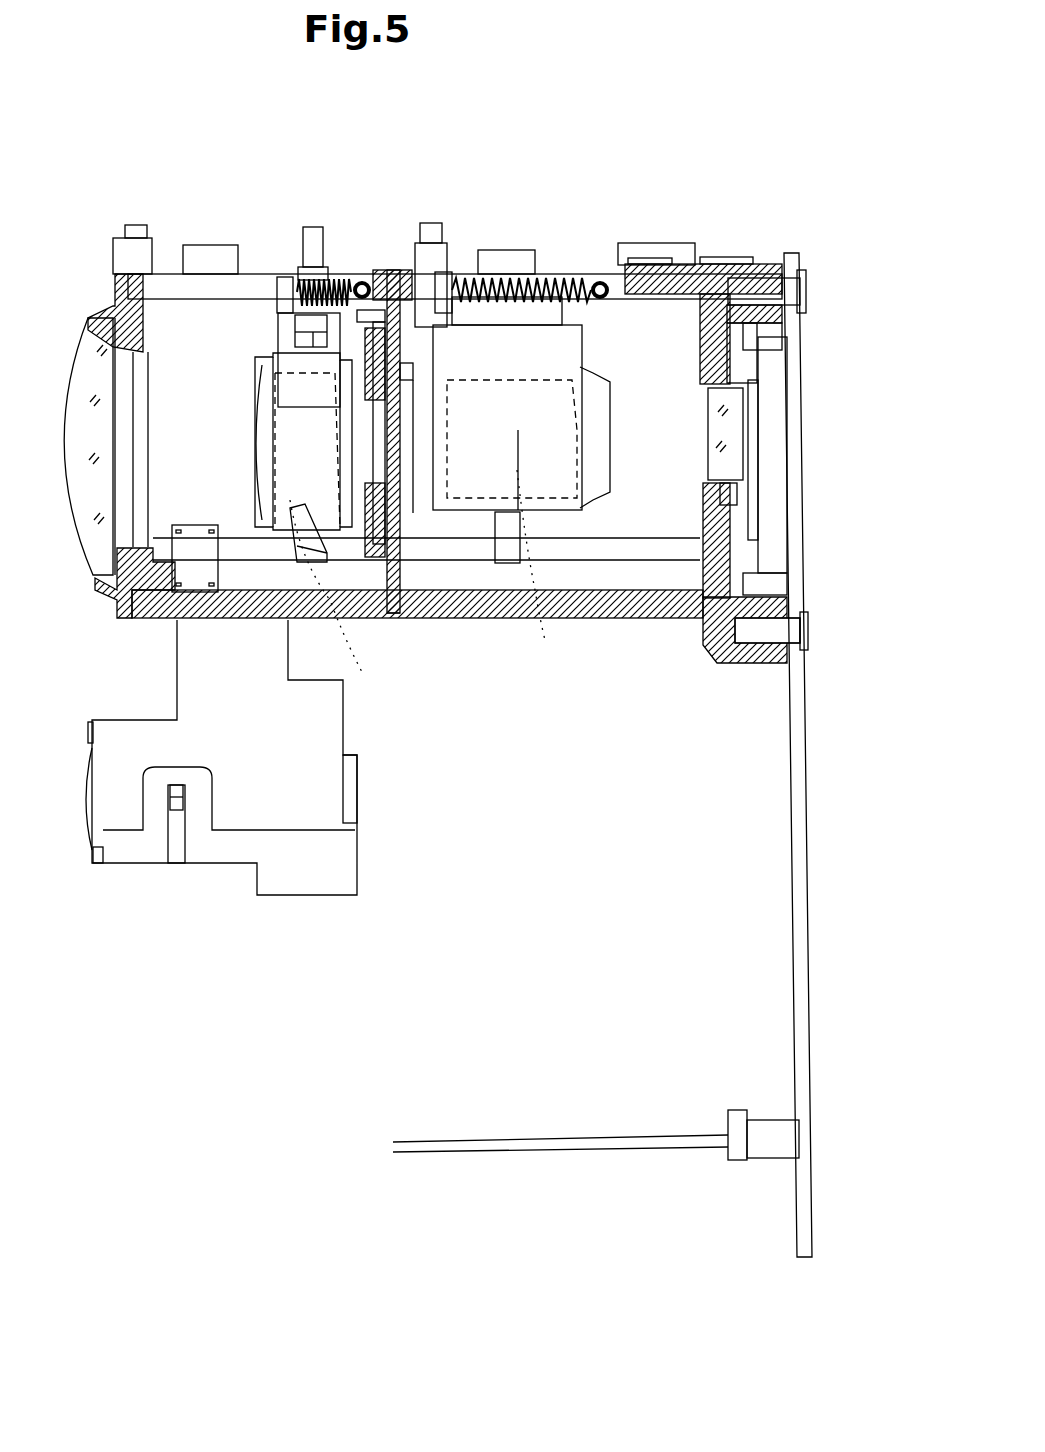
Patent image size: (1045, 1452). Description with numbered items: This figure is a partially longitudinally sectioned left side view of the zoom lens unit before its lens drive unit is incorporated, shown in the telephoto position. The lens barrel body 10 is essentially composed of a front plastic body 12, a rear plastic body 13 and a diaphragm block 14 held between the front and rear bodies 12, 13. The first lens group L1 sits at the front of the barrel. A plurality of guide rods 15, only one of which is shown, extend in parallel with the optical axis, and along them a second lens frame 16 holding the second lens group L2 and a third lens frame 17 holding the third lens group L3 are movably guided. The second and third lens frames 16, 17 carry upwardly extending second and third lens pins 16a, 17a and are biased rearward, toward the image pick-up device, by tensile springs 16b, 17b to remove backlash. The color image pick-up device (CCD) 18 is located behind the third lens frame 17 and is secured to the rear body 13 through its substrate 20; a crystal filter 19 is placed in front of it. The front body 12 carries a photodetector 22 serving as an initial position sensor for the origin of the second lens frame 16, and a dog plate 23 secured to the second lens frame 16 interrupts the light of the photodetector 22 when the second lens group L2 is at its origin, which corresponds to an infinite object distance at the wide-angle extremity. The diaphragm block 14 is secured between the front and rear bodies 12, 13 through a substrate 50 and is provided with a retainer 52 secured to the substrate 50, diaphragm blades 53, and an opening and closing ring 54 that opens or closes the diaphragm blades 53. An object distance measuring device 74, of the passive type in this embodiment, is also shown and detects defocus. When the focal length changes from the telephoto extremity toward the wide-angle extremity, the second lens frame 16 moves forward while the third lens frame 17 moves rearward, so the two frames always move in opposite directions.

The lens barrel body 10 is at (768, 248).
The front plastic body 12 is at (213, 620).
The rear plastic body 13 is at (688, 612).
The diaphragm block 14 is at (397, 618).
The guide rods 15 is at (464, 585).
The second lens frame 16 is at (258, 383).
The second lens pin 16a is at (310, 248).
The tensile spring 16b is at (347, 285).
The third lens frame 17 is at (587, 428).
The third lens pin 17a is at (430, 230).
The tensile spring 17b is at (558, 272).
The color image pick-up device (CCD) 18 is at (777, 470).
The crystal filter 19 is at (737, 408).
The substrate 20 is at (802, 765).
The photodetector (initial position sensor) 22 is at (165, 618).
The dog plate 23 is at (320, 562).
The substrate 50 is at (400, 310).
The retainer 52 is at (432, 370).
The diaphragm blades 53 is at (380, 560).
The opening and closing ring 54 is at (386, 350).
The object distance measuring device 74 is at (100, 798).
The first lens group L1 is at (95, 530).
The second lens group L2 is at (339, 598).
The third lens group L3 is at (542, 570).